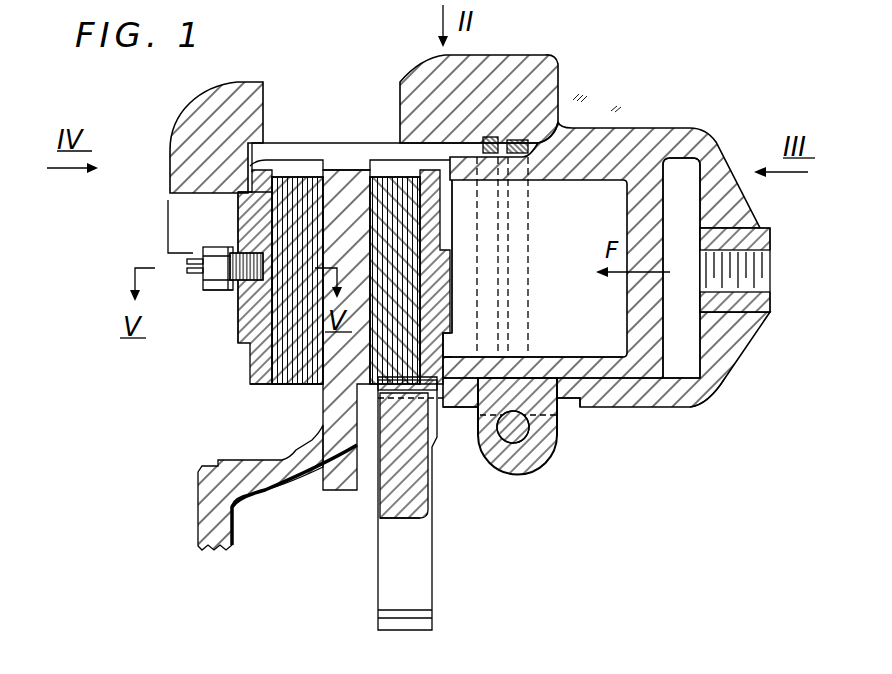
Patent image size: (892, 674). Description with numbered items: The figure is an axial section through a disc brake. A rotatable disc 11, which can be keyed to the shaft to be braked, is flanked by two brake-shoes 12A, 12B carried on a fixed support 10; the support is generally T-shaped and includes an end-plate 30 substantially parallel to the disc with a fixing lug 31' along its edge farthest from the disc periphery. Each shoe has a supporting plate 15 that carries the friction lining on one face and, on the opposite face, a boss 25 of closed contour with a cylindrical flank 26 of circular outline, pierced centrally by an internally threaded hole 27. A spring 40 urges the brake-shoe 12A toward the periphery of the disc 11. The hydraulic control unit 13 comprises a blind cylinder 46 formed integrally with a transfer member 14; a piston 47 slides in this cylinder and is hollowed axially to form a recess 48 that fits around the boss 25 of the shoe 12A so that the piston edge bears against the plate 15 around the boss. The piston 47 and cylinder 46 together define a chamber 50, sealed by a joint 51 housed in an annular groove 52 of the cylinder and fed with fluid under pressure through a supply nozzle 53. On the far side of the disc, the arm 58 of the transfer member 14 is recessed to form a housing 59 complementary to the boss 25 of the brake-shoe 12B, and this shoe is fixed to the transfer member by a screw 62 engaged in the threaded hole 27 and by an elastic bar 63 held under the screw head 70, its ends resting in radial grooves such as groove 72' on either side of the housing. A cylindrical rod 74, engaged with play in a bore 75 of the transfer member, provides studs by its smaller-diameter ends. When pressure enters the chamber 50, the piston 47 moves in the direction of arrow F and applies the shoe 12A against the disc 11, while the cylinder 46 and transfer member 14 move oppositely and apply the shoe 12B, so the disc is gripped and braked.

The support 10 is at (370, 598).
The disc 11 is at (347, 152).
The brake-shoe 12A is at (458, 313).
The brake-shoe 12B is at (245, 391).
The hydraulic control unit 13 is at (655, 392).
The transfer member 14 is at (553, 52).
The supporting plate 15 is at (427, 170).
The boss 25 is at (240, 213).
The cylindrical flank 26 is at (242, 197).
The internally threaded hole 27 is at (283, 250).
The end-plate 30 is at (393, 488).
The fixing lug 31' is at (378, 568).
The spring 40 is at (452, 402).
The blind cylinder 46 is at (692, 388).
The piston 47 is at (637, 360).
The recess 48 is at (598, 395).
The chamber 50 is at (683, 360).
The joint 51 is at (560, 124).
The annular groove 52 is at (517, 155).
The supply nozzle 53 is at (770, 268).
The arm 58 is at (200, 122).
The housing 59 is at (168, 200).
The screw 62 is at (227, 302).
The elastic bar 63 is at (178, 262).
The head 70 is at (222, 292).
The groove 72' is at (211, 290).
The cylindrical rod 74 is at (496, 450).
The bore 75 is at (520, 440).